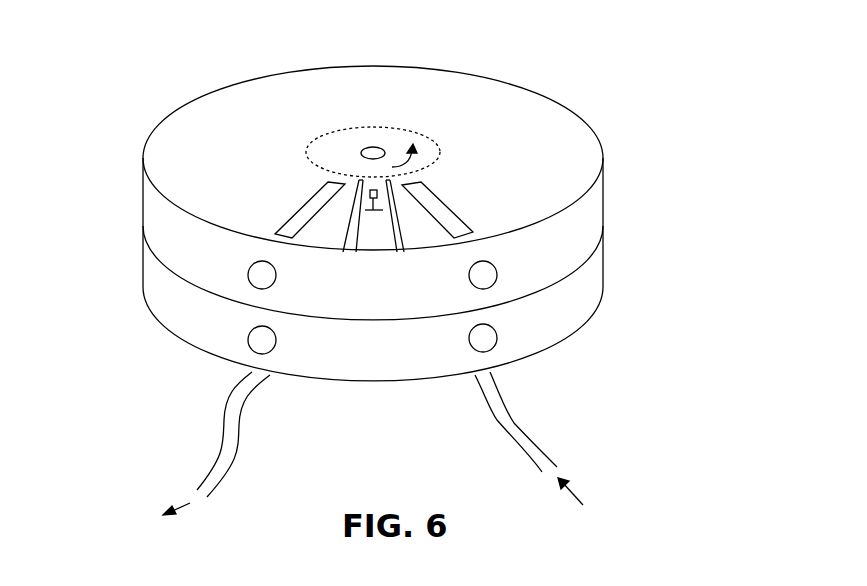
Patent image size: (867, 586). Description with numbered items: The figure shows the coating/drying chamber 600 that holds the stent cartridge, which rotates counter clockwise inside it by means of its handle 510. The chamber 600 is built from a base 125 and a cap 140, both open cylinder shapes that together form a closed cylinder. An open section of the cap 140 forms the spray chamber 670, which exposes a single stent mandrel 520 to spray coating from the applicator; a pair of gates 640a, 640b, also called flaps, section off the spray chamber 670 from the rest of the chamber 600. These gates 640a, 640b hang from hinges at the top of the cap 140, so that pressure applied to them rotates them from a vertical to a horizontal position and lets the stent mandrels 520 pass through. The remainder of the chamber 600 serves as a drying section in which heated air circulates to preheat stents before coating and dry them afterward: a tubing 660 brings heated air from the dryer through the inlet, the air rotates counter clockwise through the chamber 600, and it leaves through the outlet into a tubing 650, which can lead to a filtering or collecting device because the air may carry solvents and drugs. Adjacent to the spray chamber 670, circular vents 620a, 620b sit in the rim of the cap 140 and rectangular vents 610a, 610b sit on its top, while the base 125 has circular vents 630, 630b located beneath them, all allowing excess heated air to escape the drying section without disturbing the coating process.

The coating/drying chamber 600 is at (184, 59).
The handle 510 is at (395, 150).
The rectangular vent 610a is at (312, 203).
The rectangular vent 610b is at (445, 209).
The spray chamber 670 is at (342, 215).
The cap 140 is at (597, 220).
The base 125 is at (572, 304).
The circular vent 620a is at (248, 272).
The circular vent 620b is at (497, 273).
The gate 640a is at (347, 255).
The gate 640b is at (404, 255).
The stent mandrel 520 is at (373, 210).
The circular vent 630 is at (276, 340).
The circular vent 630b is at (497, 338).
The tubing 650 is at (240, 447).
The tubing 660 is at (515, 423).